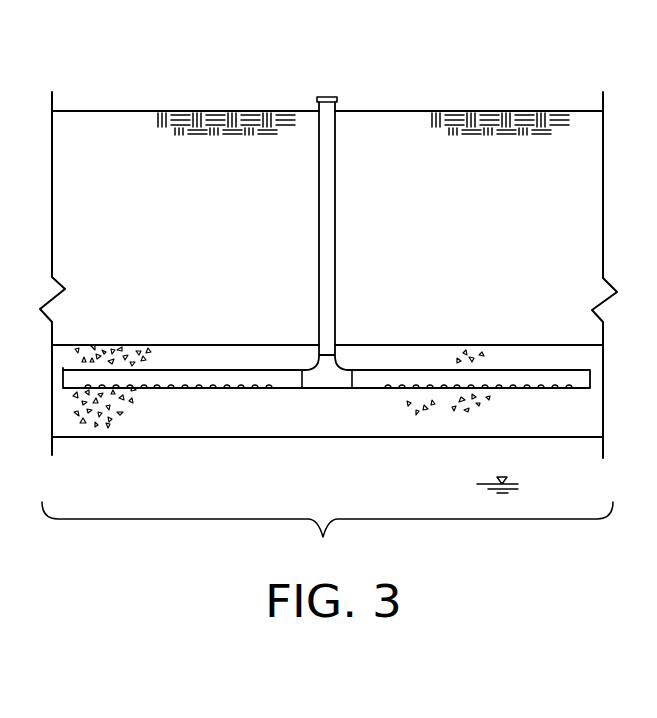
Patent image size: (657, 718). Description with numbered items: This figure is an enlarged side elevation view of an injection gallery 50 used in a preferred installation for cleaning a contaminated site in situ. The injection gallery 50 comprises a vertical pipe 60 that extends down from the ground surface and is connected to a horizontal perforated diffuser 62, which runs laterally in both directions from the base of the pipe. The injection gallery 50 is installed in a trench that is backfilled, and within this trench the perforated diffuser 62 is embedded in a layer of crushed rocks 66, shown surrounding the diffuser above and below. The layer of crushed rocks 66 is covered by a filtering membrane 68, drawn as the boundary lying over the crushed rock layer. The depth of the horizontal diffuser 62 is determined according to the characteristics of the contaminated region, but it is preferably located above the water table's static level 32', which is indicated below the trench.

The injection gallery 50 is at (408, 72).
The vertical pipe 60 is at (337, 218).
The horizontal perforated diffuser 62 is at (403, 372).
The layer of crushed rocks 66 is at (192, 360).
The filtering membrane 68 is at (245, 343).
The water table's static level 32' is at (532, 473).